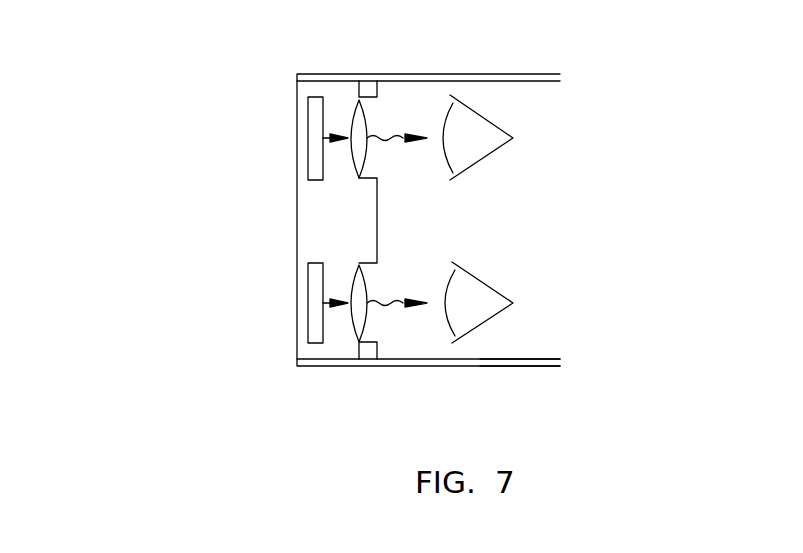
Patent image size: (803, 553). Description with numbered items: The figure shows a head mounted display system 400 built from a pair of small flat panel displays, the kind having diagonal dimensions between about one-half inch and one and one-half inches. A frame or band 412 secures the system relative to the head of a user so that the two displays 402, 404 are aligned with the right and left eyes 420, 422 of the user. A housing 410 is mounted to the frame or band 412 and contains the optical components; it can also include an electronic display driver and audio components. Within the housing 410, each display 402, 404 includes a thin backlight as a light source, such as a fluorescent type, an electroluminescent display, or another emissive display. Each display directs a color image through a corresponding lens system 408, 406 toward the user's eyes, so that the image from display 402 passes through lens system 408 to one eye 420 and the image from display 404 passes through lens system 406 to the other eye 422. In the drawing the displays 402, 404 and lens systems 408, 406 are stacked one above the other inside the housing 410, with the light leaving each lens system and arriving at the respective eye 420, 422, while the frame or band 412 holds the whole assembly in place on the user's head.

The head mounted display system 400 is at (196, 109).
The display 402 is at (315, 97).
The display 404 is at (316, 343).
The lens system 406 is at (358, 342).
The lens system 408 is at (360, 98).
The housing 410 is at (297, 223).
The frame or band 412 is at (621, 338).
The right eye 420 is at (483, 115).
The left eye 422 is at (483, 325).